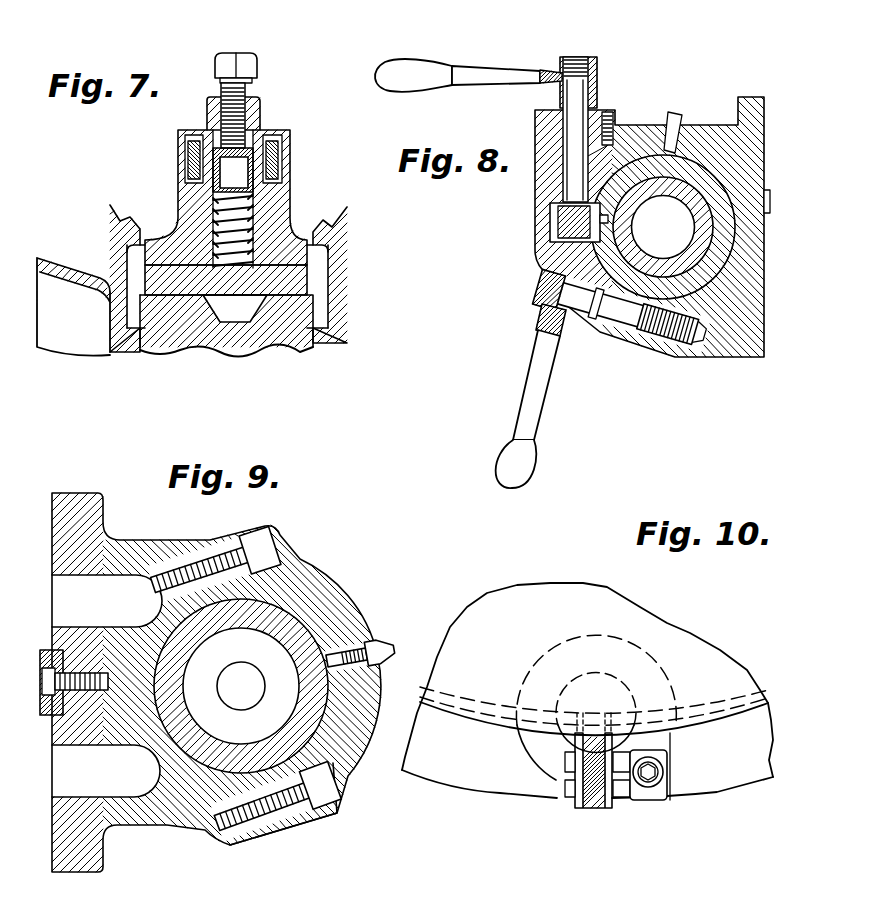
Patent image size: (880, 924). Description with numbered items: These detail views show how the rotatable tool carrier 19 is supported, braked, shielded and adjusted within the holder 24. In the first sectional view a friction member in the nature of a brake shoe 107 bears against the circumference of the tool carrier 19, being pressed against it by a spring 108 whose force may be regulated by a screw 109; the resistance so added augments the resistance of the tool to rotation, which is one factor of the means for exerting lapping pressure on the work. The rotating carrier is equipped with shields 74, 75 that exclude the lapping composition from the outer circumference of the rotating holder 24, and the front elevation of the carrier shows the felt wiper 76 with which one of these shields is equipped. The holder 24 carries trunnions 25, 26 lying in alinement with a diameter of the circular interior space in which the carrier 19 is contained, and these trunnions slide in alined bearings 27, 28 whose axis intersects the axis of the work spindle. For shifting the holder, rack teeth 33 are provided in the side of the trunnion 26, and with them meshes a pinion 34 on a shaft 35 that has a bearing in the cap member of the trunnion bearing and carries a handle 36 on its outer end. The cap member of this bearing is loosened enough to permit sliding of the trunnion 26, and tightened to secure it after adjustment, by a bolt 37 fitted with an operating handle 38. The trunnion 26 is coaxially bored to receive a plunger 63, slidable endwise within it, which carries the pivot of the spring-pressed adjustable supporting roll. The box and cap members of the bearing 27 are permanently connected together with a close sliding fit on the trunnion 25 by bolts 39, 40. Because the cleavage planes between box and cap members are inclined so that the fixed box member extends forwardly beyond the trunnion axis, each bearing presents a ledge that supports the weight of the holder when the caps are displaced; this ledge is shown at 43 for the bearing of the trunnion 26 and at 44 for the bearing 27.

In FIG. 7, the holder 24 is at (185, 195).
In FIG. 7, the screw 109 is at (243, 90).
In FIG. 7, the spring 108 is at (252, 207).
In FIG. 7, the brake shoe 107 is at (297, 278).
In FIG. 7, the carrier 19 is at (298, 337).
In FIG. 7, the shield 74 is at (110, 227).
In FIG. 7, the shield 75 is at (340, 247).
In FIG. 8, the bearing 28 is at (746, 339).
In FIG. 8, the trunnion 26 is at (718, 257).
In FIG. 8, the plunger 63 is at (684, 190).
In FIG. 8, the rack teeth 33 is at (608, 229).
In FIG. 8, the shaft 35 is at (567, 182).
In FIG. 8, the pinion 34 is at (560, 231).
In FIG. 8, the handle 36 is at (413, 65).
In FIG. 8, the bolt 37 is at (608, 327).
In FIG. 8, the ledge 43 is at (649, 339).
In FIG. 8, the operating handle 38 is at (509, 432).
In FIG. 9, the bearing 27 is at (197, 822).
In FIG. 9, the ledge 44 is at (265, 827).
In FIG. 9, the trunnion 25 is at (303, 633).
In FIG. 9, the bolt 39 is at (260, 555).
In FIG. 9, the bolt 40 is at (320, 797).
In FIG. 10, the felt wiper 76 is at (595, 805).